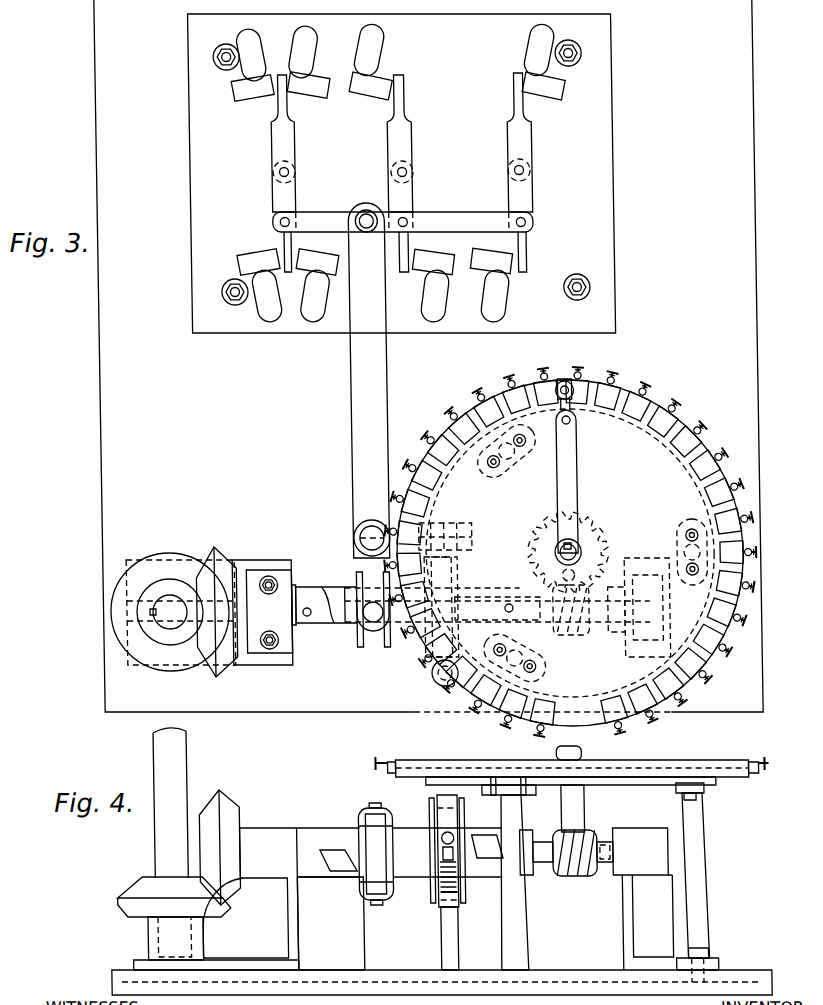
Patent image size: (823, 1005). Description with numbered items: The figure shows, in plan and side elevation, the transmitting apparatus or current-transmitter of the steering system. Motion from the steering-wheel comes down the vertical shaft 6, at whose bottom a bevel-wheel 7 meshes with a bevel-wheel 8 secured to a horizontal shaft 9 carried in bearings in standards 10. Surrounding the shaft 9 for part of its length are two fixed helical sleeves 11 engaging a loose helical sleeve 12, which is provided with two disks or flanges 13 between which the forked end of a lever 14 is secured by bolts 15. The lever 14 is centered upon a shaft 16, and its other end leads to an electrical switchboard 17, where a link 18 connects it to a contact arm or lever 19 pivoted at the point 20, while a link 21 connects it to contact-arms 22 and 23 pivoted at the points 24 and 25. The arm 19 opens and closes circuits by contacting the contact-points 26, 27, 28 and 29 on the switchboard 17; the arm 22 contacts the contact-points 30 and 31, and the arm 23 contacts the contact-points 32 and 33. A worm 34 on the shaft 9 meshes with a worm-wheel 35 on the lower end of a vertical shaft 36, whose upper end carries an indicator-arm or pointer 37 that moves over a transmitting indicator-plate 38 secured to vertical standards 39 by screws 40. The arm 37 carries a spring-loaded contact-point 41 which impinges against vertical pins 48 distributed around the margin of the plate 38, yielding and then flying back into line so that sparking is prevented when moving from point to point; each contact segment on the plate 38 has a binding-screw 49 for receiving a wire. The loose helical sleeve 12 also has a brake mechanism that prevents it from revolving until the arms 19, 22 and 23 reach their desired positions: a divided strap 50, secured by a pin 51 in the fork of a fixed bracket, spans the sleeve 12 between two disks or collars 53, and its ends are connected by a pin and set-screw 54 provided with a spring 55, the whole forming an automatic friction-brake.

In FIG. 3, the vertical shaft 6 is at (170, 612).
In FIG. 4, the vertical shaft 6 is at (170, 803).
In FIG. 3, the bevel-wheel 7 is at (181, 612).
In FIG. 4, the bevel-wheel 7 is at (174, 918).
In FIG. 3, the bevel-wheel 8 is at (217, 612).
In FIG. 4, the bevel-wheel 8 is at (220, 847).
In FIG. 3, the horizontal shaft 9 is at (498, 608).
In FIG. 4, the horizontal shaft 9 is at (545, 864).
In FIG. 3, the standards 10 is at (451, 594).
In FIG. 4, the standards 10 is at (403, 899).
In FIG. 3, the fixed helical sleeves 11 is at (522, 630).
In FIG. 4, the fixed helical sleeves 11 is at (320, 868).
In FIG. 3, the loose helical sleeve 12 is at (494, 660).
In FIG. 4, the loose helical sleeve 12 is at (371, 855).
In FIG. 3, the disks or flanges 13 is at (376, 620).
In FIG. 4, the disks or flanges 13 is at (379, 845).
In FIG. 3, the lever 14 is at (369, 380).
In FIG. 3, the bolts 15 is at (366, 603).
In FIG. 4, the bolts 15 is at (380, 849).
In FIG. 3, the shaft 16 is at (353, 536).
In FIG. 3, the electrical switchboard 17 is at (402, 173).
In FIG. 3, the link 18 is at (403, 222).
In FIG. 3, the contact arm or lever 19 is at (296, 136).
In FIG. 3, the pivot point 20 is at (290, 172).
In FIG. 3, the link 21 is at (452, 222).
In FIG. 3, the contact-arm 22 is at (413, 139).
In FIG. 3, the contact-arm 23 is at (520, 172).
In FIG. 3, the pivot point 24 is at (408, 172).
In FIG. 3, the pivot point 25 is at (526, 167).
In FIG. 3, the contact-point 26 is at (252, 64).
In FIG. 3, the contact-point 27 is at (308, 61).
In FIG. 3, the contact-point 28 is at (260, 286).
In FIG. 3, the contact-point 29 is at (318, 286).
In FIG. 3, the contact-point 30 is at (370, 61).
In FIG. 3, the contact-point 31 is at (434, 286).
In FIG. 3, the contact-point 32 is at (543, 61).
In FIG. 3, the contact-point 33 is at (492, 285).
In FIG. 3, the worm 34 is at (576, 620).
In FIG. 4, the worm 34 is at (575, 877).
In FIG. 3, the worm-wheel 35 is at (568, 552).
In FIG. 3, the vertical shaft 36 is at (577, 571).
In FIG. 4, the vertical shaft 36 is at (586, 807).
In FIG. 3, the indicator-arm or pointer 37 is at (580, 474).
In FIG. 4, the indicator-arm or pointer 37 is at (584, 750).
In FIG. 3, the transmitting indicator-plate 38 is at (570, 553).
In FIG. 4, the transmitting indicator-plate 38 is at (571, 771).
In FIG. 4, the vertical standards 39 is at (727, 895).
In FIG. 3, the screws 40 is at (686, 535).
In FIG. 4, the screws 40 is at (514, 799).
In FIG. 3, the contact-point 41 is at (578, 394).
In FIG. 3, the vertical pins 48 is at (403, 470).
In FIG. 3, the binding-screw 49 is at (551, 366).
In FIG. 4, the binding-screw 49 is at (570, 762).
In FIG. 4, the divided strap 50 is at (455, 836).
In FIG. 4, the pin 51 is at (443, 852).
In FIG. 4, the disks or collars 53 is at (430, 821).
In FIG. 4, the pin and set-screw 54 is at (441, 900).
In FIG. 4, the spring 55 is at (458, 882).